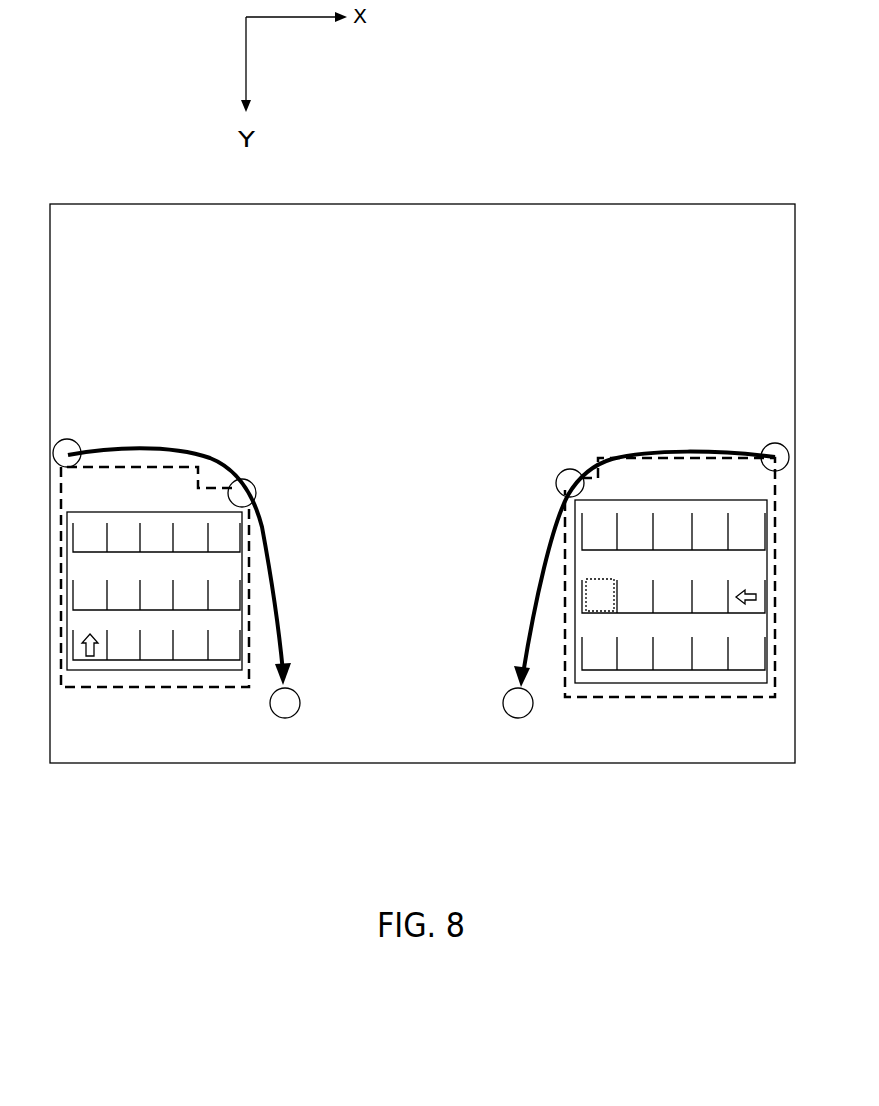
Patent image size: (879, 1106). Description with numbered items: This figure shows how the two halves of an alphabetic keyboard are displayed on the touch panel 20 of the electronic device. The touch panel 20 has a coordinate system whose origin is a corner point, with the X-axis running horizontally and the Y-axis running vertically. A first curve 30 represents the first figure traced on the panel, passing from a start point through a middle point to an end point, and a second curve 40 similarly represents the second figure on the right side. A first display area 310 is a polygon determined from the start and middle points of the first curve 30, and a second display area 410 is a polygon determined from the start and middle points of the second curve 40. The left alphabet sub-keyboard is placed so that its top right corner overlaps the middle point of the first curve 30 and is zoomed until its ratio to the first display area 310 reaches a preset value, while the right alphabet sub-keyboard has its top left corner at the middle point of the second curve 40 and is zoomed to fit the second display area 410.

The touch panel 20 is at (422, 203).
The first curve 30 is at (168, 448).
The second curve 40 is at (660, 452).
The first display area 310 is at (155, 577).
The second display area 410 is at (670, 577).